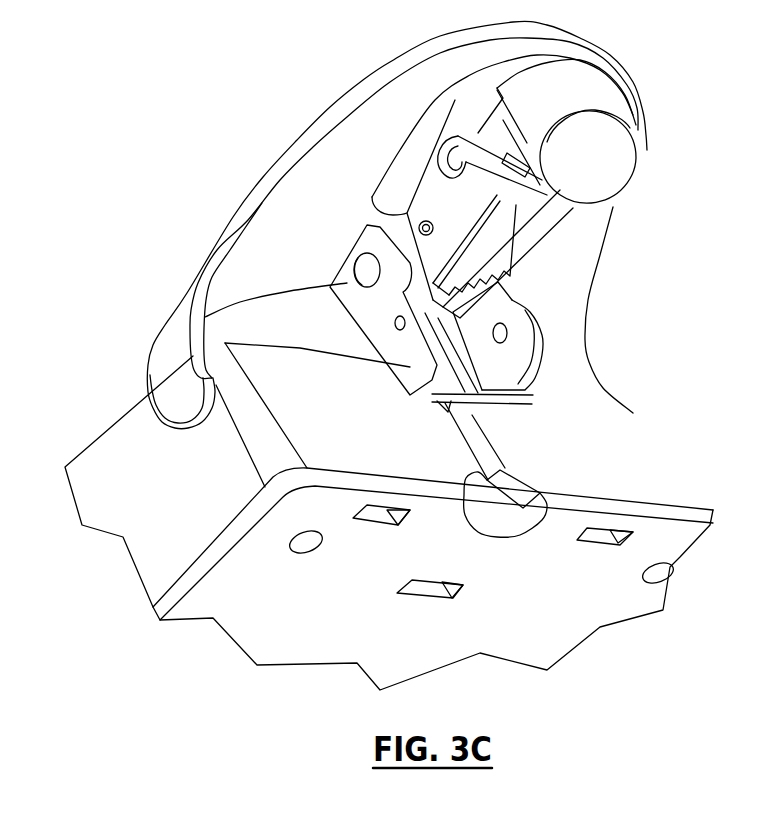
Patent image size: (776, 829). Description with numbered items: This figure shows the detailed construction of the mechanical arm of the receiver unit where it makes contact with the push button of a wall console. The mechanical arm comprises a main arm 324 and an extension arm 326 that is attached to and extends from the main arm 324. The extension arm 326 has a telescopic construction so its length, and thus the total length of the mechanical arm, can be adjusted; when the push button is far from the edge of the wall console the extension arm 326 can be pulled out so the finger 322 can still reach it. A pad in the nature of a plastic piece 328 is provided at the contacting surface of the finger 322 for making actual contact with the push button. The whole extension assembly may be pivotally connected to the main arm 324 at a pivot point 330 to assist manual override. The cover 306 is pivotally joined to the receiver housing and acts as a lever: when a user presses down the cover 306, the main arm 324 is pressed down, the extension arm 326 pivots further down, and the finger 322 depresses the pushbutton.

The cover 306 is at (293, 210).
The finger 322 is at (577, 88).
The main arm 324 is at (517, 353).
The extension arm 326 is at (513, 250).
The plastic piece 328 is at (612, 170).
The pivot point 330 is at (358, 266).